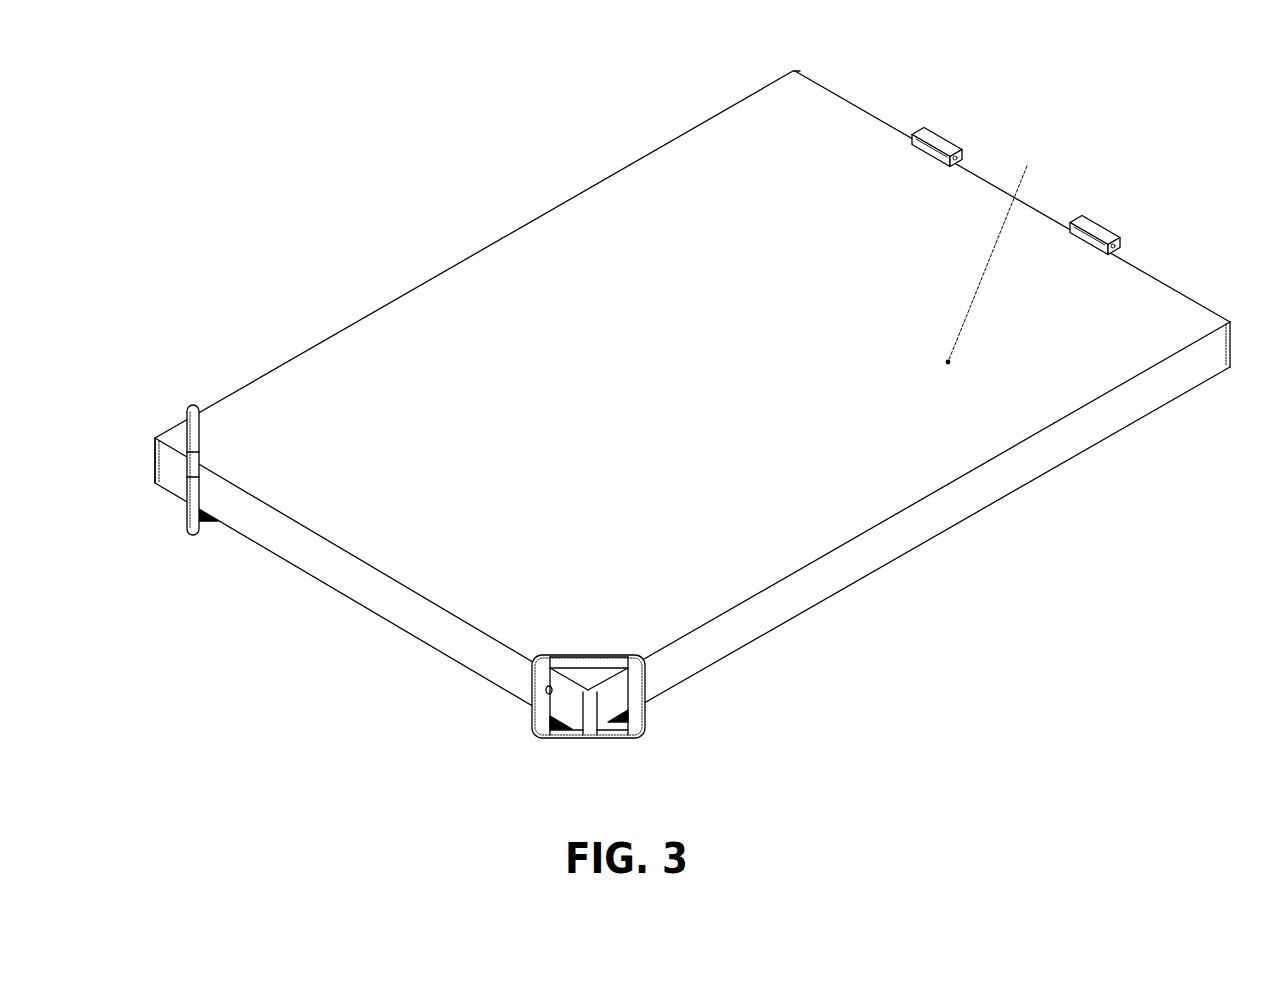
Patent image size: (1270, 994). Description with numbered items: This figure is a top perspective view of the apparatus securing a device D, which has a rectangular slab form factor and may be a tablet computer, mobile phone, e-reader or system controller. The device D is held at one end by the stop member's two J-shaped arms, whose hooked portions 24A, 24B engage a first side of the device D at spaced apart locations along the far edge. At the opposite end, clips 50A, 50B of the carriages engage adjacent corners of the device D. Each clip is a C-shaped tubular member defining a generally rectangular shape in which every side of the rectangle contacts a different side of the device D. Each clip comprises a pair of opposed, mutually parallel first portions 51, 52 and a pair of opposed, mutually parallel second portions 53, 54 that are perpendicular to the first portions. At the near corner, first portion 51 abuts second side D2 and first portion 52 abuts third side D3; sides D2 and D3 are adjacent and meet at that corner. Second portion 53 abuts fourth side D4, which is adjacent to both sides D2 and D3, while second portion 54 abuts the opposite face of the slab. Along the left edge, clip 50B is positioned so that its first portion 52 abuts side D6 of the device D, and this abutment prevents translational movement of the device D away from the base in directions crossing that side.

The hooked portion 24A is at (1085, 223).
The hooked portion 24B is at (927, 136).
The clip 50A is at (583, 697).
The clip 50B is at (199, 468).
The first portion 51 is at (532, 700).
The first portion 52 is at (645, 710).
The second portion 53 is at (583, 658).
The second portion 54 is at (567, 735).
The device D is at (993, 251).
The second side D2 is at (417, 618).
The third side D3 is at (689, 652).
The fourth side D4 is at (342, 366).
The sixth side D6 is at (450, 251).